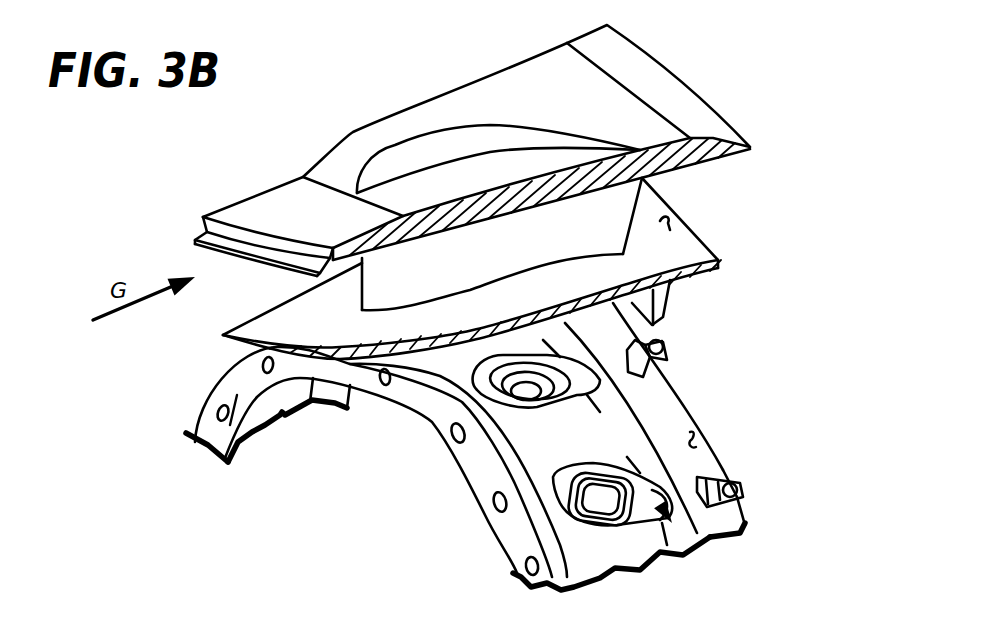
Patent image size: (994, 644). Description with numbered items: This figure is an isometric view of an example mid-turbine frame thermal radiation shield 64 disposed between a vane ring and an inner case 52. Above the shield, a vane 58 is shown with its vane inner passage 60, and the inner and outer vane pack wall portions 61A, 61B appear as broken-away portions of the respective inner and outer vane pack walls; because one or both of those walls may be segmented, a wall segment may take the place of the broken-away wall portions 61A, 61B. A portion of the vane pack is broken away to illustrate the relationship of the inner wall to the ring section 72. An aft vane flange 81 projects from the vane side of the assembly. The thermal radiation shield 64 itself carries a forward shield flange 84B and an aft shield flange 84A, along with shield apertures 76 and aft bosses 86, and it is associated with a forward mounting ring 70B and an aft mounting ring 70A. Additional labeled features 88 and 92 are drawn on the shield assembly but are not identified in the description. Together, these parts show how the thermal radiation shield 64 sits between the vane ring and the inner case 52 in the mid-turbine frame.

The inner case 52 is at (281, 438).
The vane 58 is at (490, 257).
The vane inner passage 60 is at (410, 152).
The inner vane pack wall portion 61A is at (670, 210).
The outer vane pack wall portion 61B is at (216, 187).
The thermal radiation shield 64 is at (720, 397).
The aft mounting ring 70A is at (788, 511).
The forward mounting ring 70B is at (168, 454).
The ring section 72 is at (629, 562).
The shield apertures 76 is at (712, 539).
The aft vane flange 81 is at (668, 297).
The aft shield flange 84A is at (700, 437).
The forward shield flange 84B is at (230, 425).
The aft bosses 86 is at (737, 487).
The flange ring 88 is at (527, 437).
The boss 92 is at (448, 393).